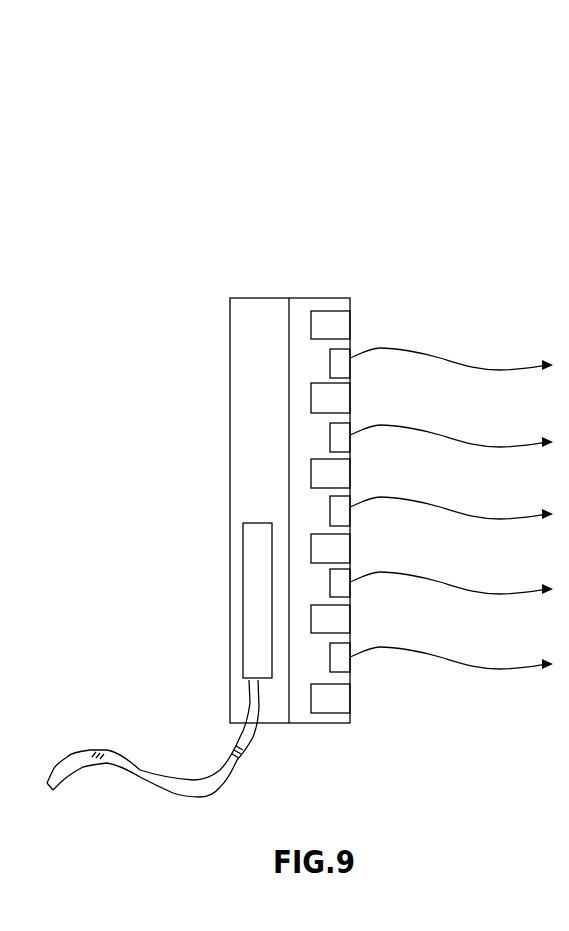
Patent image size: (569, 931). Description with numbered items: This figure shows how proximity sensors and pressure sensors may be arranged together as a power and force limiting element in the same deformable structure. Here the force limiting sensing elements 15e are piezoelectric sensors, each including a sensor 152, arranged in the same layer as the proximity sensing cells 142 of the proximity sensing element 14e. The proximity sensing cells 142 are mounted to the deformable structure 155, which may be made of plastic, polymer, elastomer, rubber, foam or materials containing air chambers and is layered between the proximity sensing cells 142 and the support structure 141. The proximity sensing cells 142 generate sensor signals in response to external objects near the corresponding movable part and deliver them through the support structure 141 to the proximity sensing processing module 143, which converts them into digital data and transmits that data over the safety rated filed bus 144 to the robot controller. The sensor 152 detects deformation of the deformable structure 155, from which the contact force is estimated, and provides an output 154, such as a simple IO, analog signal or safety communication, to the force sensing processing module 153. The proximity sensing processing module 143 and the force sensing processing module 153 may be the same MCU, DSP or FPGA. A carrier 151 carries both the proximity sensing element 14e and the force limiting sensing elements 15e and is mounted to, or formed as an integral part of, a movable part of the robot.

The proximity sensing element 14e is at (143, 117).
The force limiting sensing elements 15e is at (300, 425).
The support structure 141 is at (248, 448).
The carrier 151 is at (214, 510).
The proximity sensing cells 142 is at (340, 362).
The sensor 152 is at (333, 323).
The proximity sensing processing module 143 is at (262, 610).
The force sensing processing module 153 is at (181, 600).
The safety rated filed bus 144 is at (220, 787).
The output 154 is at (238, 740).
The deformable structure 155 is at (298, 310).